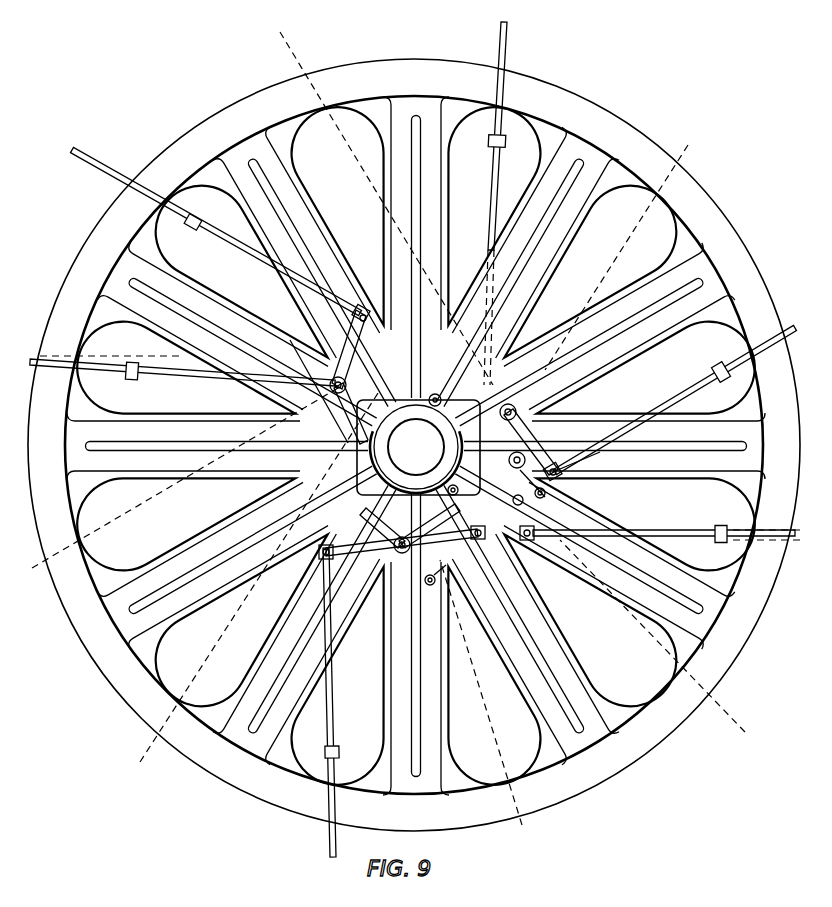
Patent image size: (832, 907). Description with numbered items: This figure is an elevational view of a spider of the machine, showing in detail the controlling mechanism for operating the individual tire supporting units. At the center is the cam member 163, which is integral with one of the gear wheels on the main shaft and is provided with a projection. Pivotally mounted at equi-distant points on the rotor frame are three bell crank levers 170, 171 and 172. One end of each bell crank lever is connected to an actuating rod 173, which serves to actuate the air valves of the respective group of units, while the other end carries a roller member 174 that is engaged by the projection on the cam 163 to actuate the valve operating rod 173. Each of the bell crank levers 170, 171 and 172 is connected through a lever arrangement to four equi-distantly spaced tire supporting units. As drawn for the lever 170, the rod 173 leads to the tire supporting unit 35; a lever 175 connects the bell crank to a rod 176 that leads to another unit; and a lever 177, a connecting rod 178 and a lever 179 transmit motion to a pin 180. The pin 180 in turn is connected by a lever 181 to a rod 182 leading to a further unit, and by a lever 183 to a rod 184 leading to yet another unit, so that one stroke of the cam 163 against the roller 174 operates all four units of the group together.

The tire supporting unit 35 is at (416, 446).
The cam member 163 is at (414, 493).
The bell crank lever 170 is at (365, 556).
The bell crank lever 171 is at (533, 420).
The bell crank lever 172 is at (337, 376).
The actuating rod 173 is at (331, 720).
The roller member 174 is at (466, 485).
The lever 175 is at (462, 580).
The rod 176 is at (560, 285).
The lever 177 is at (395, 590).
The connecting rod 178 is at (473, 557).
The lever 179 is at (548, 477).
The pin 180 is at (514, 466).
The lever 181 is at (513, 500).
The rod 182 is at (633, 537).
The lever 183 is at (520, 410).
The rod 184 is at (478, 340).